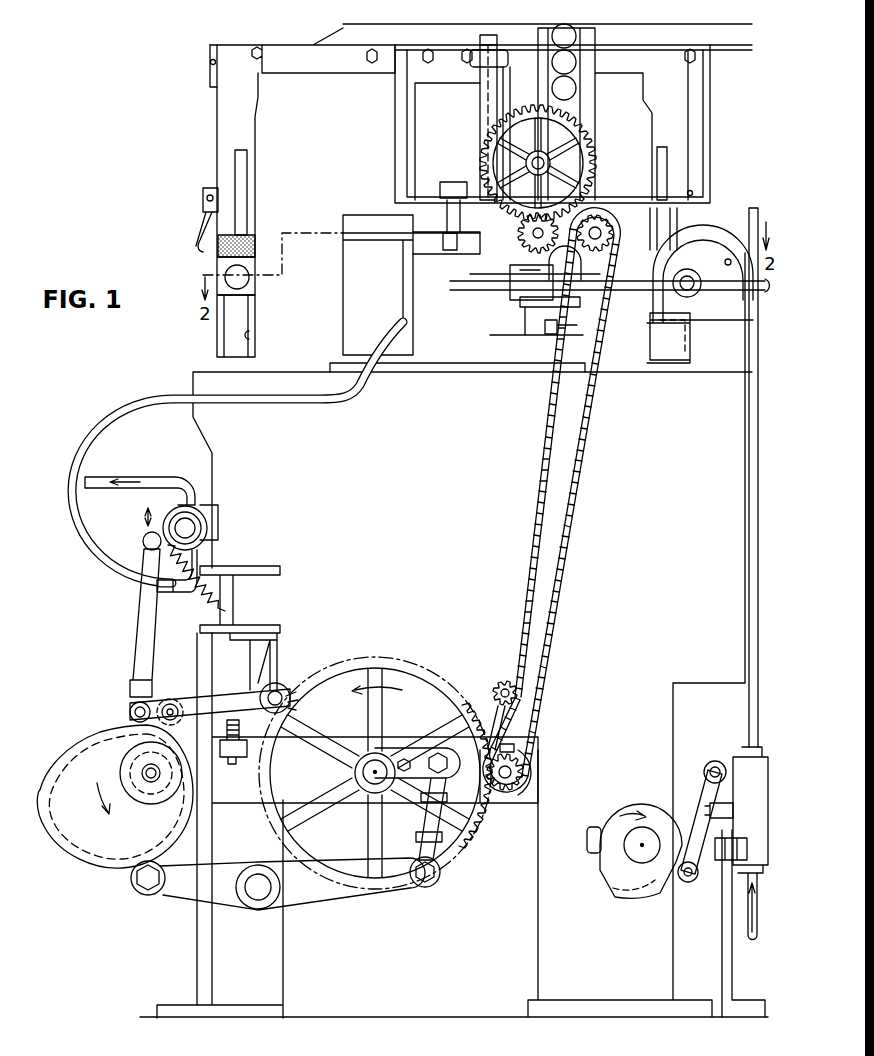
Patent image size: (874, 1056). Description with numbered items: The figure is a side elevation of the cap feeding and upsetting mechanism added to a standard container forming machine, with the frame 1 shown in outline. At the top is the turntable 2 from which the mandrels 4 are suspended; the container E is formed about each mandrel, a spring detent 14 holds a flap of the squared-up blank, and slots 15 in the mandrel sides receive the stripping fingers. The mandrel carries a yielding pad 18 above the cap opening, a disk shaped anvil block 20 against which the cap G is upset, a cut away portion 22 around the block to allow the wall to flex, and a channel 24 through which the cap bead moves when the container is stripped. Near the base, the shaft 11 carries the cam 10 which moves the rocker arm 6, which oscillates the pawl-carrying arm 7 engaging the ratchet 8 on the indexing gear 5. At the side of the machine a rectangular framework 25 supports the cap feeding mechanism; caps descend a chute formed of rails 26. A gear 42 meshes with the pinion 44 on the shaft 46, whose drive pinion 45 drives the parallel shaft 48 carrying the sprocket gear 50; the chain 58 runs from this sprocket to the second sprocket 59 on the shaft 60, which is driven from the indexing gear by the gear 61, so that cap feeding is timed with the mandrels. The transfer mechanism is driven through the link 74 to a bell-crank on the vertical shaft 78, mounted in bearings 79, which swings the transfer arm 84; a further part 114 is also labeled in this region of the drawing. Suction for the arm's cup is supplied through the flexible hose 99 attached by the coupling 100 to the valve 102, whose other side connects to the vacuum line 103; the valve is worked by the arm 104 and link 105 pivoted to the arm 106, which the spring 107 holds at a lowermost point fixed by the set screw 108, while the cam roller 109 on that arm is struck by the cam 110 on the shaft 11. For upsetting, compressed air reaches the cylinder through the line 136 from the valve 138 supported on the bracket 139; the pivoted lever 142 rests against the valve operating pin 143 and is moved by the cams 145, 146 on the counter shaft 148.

The frame 1 is at (193, 413).
The turntable 2 is at (320, 66).
The mandrel 4 is at (243, 138).
The indexing gear 5 is at (428, 680).
The rocker arm 6 is at (348, 895).
The pawl-carrying arm 7 is at (463, 712).
The ratchet 8 is at (411, 784).
The cam 10 is at (125, 860).
The shaft 11 is at (149, 771).
The spring detent 14 is at (203, 233).
The slots 15 is at (247, 200).
The pad 18 is at (249, 243).
The anvil block 20 is at (242, 279).
The cut away portion 22 is at (250, 297).
The channel 24 is at (252, 336).
The rectangular framework 25 is at (396, 161).
The rails 26 is at (587, 126).
The gear 42 is at (588, 168).
The pinion 44 is at (527, 233).
The drive pinion 45 is at (528, 256).
The shaft 46 is at (446, 231).
The shaft 48 is at (597, 230).
The sprocket gear 50 is at (605, 262).
The chain 58 is at (567, 556).
The second sprocket 59 is at (530, 762).
The shaft 60 is at (510, 748).
The gear 61 is at (534, 782).
The link 74 is at (627, 284).
The vertical shaft 78 is at (480, 115).
The bearings 79 is at (477, 64).
The transfer arm 84 is at (526, 308).
The flexible hose 99 is at (290, 402).
The coupling 100 is at (575, 326).
The valve 102 is at (207, 527).
The line 103 is at (118, 477).
The arm 104 is at (142, 537).
The link 105 is at (148, 625).
The arm 106 is at (265, 686).
The spring 107 is at (224, 608).
The set screw 108 is at (233, 764).
The cam roller 109 is at (175, 702).
The cam 110 is at (85, 865).
The bracket 114 is at (448, 243).
The line 136 is at (749, 616).
The valve 138 is at (738, 870).
The bracket 139 is at (726, 960).
The pivoted lever 142 is at (681, 882).
The valve operating pin 143 is at (710, 808).
The cam 145 is at (602, 830).
The cam 146 is at (630, 896).
The counter shaft 148 is at (638, 850).
The container E is at (420, 291).
The cap G is at (570, 100).